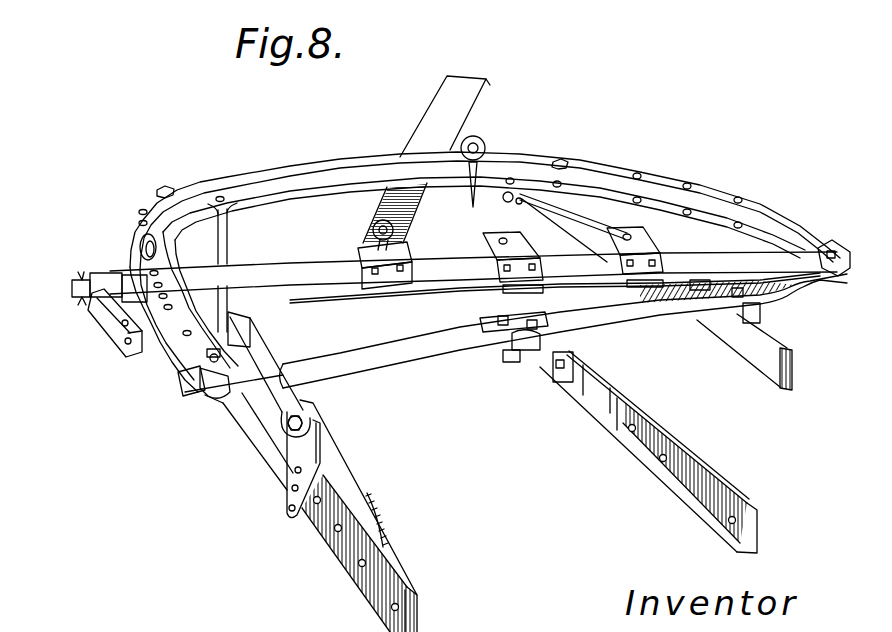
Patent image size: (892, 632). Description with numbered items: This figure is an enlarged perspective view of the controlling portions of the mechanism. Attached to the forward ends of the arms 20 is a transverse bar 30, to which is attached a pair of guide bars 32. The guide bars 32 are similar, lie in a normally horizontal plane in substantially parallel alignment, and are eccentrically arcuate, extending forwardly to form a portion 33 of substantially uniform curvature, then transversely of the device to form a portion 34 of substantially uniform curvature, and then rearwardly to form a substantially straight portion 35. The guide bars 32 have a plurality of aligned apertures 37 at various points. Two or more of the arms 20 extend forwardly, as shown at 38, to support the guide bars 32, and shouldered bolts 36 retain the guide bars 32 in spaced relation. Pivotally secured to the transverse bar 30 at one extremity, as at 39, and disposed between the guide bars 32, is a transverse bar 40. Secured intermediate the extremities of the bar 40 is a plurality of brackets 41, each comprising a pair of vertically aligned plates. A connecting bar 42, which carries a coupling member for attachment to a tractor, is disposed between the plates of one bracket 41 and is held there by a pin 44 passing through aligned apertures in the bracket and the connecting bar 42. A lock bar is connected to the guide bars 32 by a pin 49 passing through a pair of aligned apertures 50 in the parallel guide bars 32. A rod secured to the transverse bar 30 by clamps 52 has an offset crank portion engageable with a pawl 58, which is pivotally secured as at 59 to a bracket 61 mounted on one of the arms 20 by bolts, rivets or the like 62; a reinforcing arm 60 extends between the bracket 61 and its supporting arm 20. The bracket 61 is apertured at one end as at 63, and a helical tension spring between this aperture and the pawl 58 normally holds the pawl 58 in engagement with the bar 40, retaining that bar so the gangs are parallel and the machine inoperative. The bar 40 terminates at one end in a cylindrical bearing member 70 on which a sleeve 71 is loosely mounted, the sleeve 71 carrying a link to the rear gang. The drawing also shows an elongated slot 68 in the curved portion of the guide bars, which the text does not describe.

The arms 20 is at (397, 573).
The transverse bar 30 is at (410, 360).
The guide bars 32 is at (360, 183).
The portion of substantially uniform curvature 33 is at (172, 347).
The portion of substantially uniform curvature 34 is at (312, 160).
The substantially straight portion 35 is at (787, 214).
The shouldered bolts 36 is at (168, 187).
The aligned apertures 37 is at (140, 212).
The forwardly extending portion of arms 38 is at (228, 243).
The pivot 39 is at (825, 245).
The transverse bar 40 is at (447, 283).
The brackets 41 is at (358, 258).
The connecting bar 42 is at (478, 95).
The pin 44 is at (372, 222).
The pin 49 is at (487, 146).
The aligned apertures 50 is at (641, 176).
The clamps 52 is at (292, 364).
The pawl 58 is at (255, 337).
The pivot 59 is at (243, 440).
The reinforcing arm 60 is at (360, 492).
The bracket 61 is at (313, 448).
The bolts, rivets or the like 62 is at (292, 484).
The aperture 63 is at (293, 512).
The slot 68 is at (140, 247).
The cylindrical bearing member 70 is at (72, 298).
The sleeve 71 is at (97, 333).